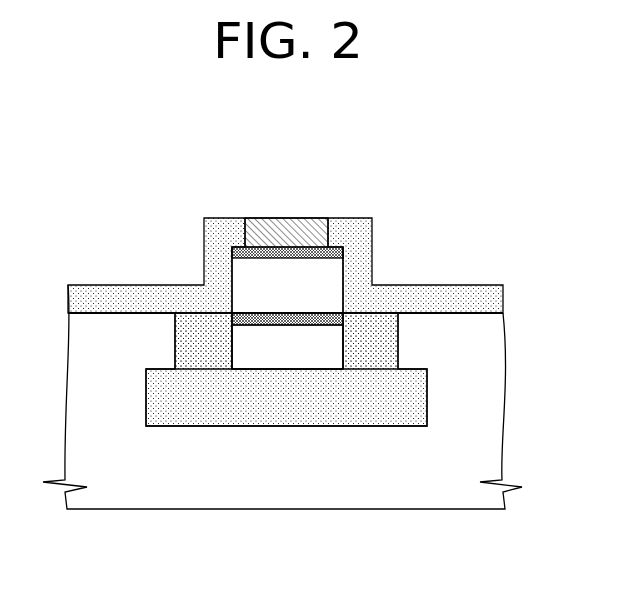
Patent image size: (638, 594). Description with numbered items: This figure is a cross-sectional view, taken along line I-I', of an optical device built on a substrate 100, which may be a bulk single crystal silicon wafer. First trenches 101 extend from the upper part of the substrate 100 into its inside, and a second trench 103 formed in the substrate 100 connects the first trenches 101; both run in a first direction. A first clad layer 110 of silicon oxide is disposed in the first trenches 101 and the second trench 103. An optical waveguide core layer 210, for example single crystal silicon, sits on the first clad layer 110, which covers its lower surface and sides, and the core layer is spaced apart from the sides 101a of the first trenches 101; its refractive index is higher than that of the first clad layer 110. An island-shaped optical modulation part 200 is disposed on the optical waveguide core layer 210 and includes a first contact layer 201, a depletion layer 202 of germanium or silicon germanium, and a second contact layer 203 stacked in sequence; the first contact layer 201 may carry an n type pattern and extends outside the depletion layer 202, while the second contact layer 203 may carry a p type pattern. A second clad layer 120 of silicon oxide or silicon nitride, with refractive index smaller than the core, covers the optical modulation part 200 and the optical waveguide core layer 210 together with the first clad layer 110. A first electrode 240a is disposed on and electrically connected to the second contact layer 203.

The substrate 100 is at (490, 453).
The first trenches 101 is at (393, 357).
The sides of the first trenches 101a is at (400, 327).
The second trench 103 is at (420, 403).
The first clad layer 110 is at (373, 407).
The second clad layer 120 is at (493, 300).
The optical modulation part 200 is at (187, 284).
The first contact layer 201 is at (230, 318).
The depletion layer 202 is at (240, 282).
The second contact layer 203 is at (232, 252).
The optical waveguide core layer 210 is at (287, 350).
The first electrode 240a is at (287, 227).